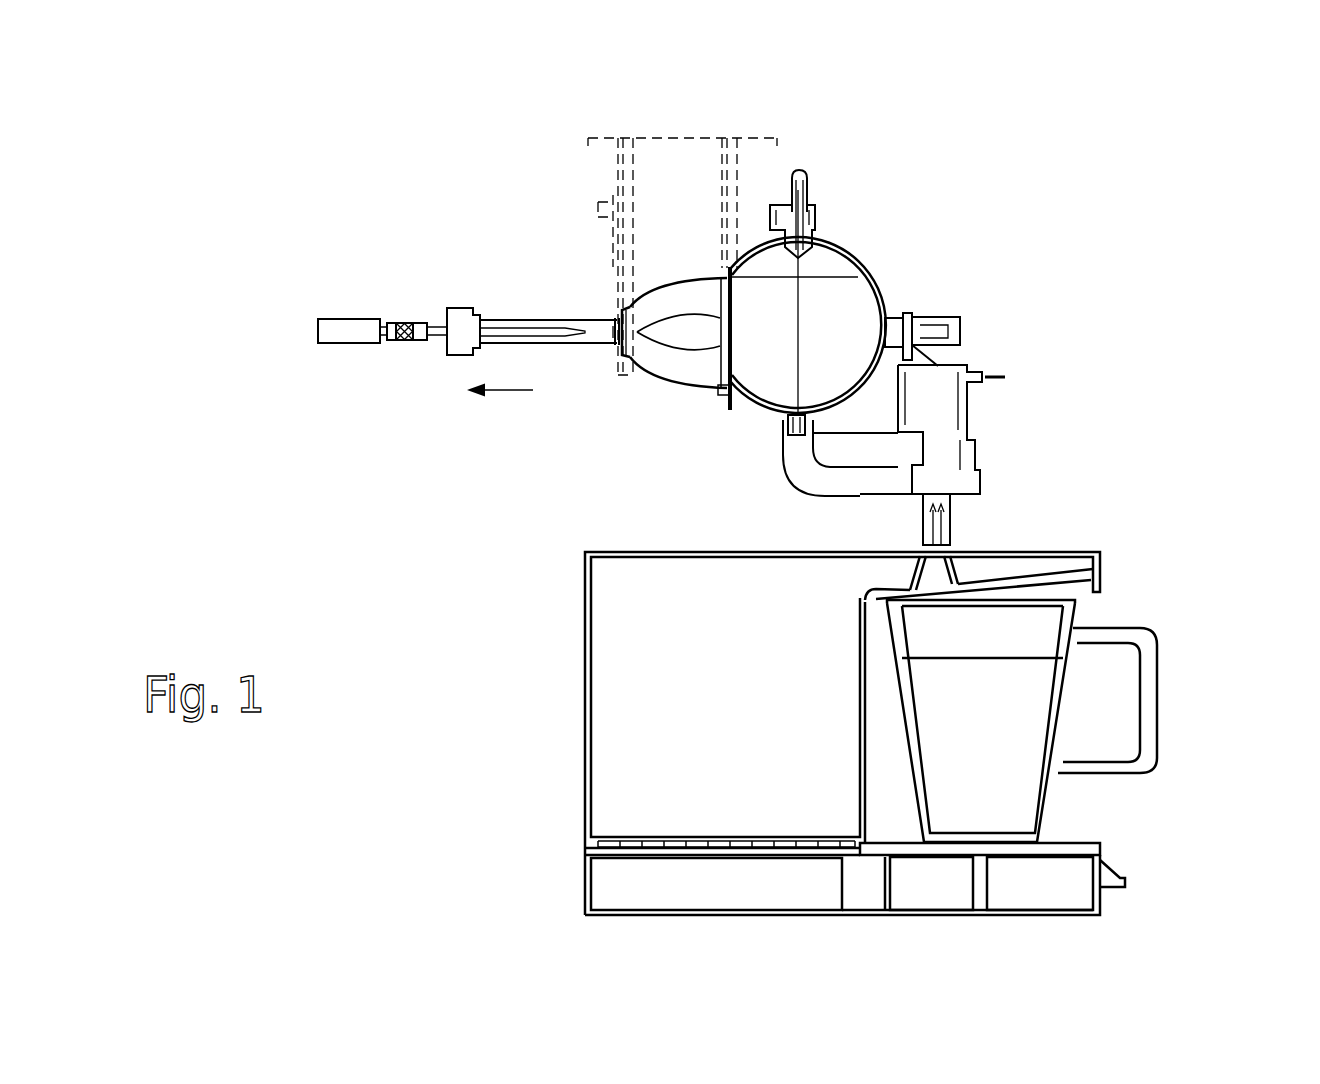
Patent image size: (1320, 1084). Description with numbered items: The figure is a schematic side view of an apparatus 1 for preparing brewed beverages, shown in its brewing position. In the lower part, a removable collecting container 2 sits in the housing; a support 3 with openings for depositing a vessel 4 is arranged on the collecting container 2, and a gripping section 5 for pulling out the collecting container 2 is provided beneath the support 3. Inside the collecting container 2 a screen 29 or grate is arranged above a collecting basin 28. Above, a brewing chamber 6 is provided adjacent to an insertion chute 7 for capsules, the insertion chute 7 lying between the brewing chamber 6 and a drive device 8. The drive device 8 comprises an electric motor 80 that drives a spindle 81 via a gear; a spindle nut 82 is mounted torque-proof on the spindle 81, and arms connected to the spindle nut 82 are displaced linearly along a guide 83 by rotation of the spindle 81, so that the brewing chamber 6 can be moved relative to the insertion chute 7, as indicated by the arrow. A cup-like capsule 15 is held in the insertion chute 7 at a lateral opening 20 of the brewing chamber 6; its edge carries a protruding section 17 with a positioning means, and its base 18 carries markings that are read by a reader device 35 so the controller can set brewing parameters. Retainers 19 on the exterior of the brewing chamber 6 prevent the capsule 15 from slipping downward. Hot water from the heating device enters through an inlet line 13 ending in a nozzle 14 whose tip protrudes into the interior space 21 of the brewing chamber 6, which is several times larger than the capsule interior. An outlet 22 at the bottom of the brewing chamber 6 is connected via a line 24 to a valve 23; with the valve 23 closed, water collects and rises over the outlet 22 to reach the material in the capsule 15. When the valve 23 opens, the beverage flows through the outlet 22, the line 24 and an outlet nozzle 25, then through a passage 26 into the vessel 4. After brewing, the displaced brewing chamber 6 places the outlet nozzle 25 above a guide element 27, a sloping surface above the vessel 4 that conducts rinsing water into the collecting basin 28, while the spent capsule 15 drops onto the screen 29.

The apparatus for preparing brewed beverages 1 is at (1121, 291).
The collecting container 2 is at (590, 815).
The support 3 is at (1057, 848).
The vessel 4 is at (1067, 638).
The gripping section 5 is at (1118, 873).
The brewing chamber 6 is at (858, 270).
The insertion chute 7 is at (663, 163).
The drive device 8 is at (404, 302).
The inlet line 13 is at (803, 175).
The nozzle 14 is at (813, 240).
The capsule 15 is at (677, 303).
The protruding section 17 is at (727, 268).
The base 18 is at (632, 355).
The retainers 19 is at (722, 388).
The lateral opening 20 is at (736, 303).
The interior space 21 is at (827, 327).
The outlet 22 is at (783, 430).
The valve 23 is at (982, 469).
The line 24 is at (795, 473).
The outlet nozzle 25 is at (937, 530).
The passage 26 is at (937, 573).
The guide element 27 is at (1073, 573).
The collecting basin 28 is at (623, 887).
The screen 29 is at (592, 846).
The reader device 35 is at (615, 332).
The electric motor 80 is at (333, 328).
The spindle 81 is at (528, 330).
The spindle nut 82 is at (457, 318).
The guide 83 is at (945, 325).